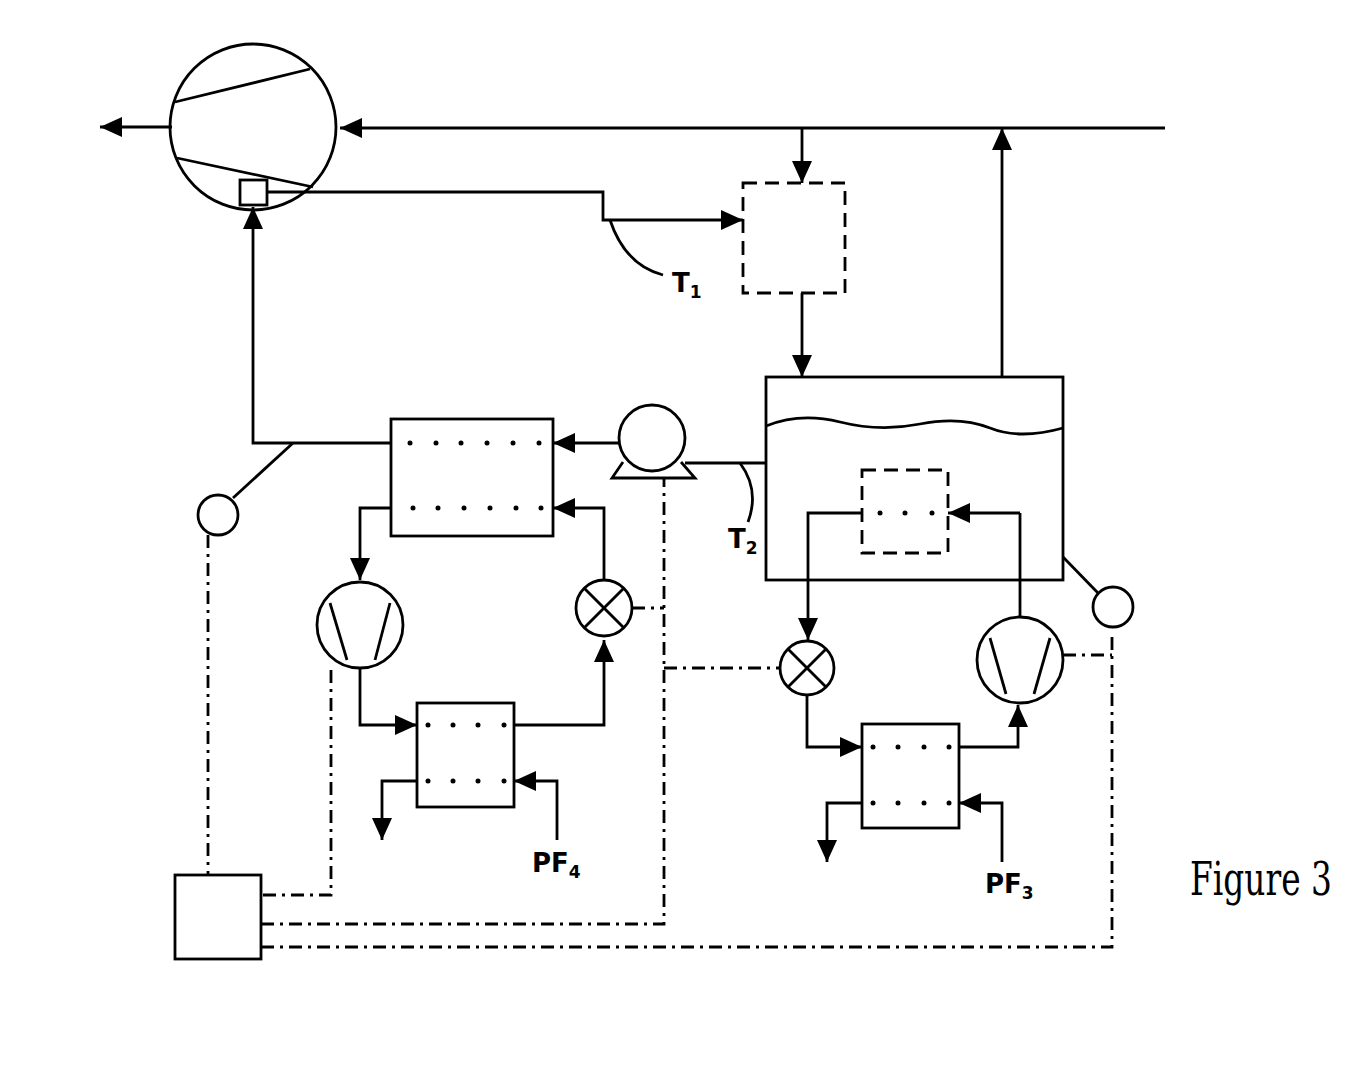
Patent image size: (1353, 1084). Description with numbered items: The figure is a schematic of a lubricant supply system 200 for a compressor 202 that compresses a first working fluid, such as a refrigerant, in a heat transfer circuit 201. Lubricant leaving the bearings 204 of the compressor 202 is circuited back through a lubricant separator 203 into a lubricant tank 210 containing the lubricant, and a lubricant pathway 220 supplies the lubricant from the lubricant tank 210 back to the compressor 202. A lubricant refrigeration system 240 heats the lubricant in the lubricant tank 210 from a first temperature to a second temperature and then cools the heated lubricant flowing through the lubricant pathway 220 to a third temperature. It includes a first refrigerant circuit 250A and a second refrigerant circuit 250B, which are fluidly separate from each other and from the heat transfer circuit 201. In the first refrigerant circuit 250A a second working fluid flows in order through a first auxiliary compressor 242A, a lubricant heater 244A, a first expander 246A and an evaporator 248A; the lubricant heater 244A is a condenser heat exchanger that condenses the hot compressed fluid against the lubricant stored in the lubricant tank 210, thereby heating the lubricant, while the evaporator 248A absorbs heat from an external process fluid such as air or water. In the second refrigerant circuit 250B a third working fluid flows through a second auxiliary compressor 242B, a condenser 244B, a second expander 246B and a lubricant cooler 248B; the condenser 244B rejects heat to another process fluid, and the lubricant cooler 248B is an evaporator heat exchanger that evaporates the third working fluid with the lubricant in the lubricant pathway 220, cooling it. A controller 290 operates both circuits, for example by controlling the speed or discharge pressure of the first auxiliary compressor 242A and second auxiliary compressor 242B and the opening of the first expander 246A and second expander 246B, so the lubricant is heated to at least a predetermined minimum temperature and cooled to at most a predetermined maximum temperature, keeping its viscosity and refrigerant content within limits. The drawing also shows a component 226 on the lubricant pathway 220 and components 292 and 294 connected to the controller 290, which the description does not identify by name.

The lubricant supply system 200 is at (232, 400).
The heat transfer circuit 201 is at (400, 128).
The compressor 202 is at (183, 178).
The lubricant separator 203 is at (845, 260).
The bearings 204 is at (237, 193).
The lubricant tank 210 is at (1063, 380).
The lubricant pathway 220 is at (252, 398).
The pump 226 is at (652, 405).
The lubricant refrigeration system 240 is at (293, 653).
The first auxiliary compressor 242A is at (1058, 685).
The second auxiliary compressor 242B is at (345, 587).
The lubricant heater 244A is at (948, 478).
The condenser 244B is at (497, 807).
The first expander 246A is at (797, 695).
The second expander 246B is at (615, 637).
The evaporator 248A is at (932, 828).
The lubricant cooler 248B is at (478, 418).
The first refrigerant circuit 250A is at (1020, 750).
The second refrigerant circuit 250B is at (357, 720).
The controller 290 is at (173, 897).
The first temperature sensor 292 is at (1135, 600).
The third temperature sensor 294 is at (205, 528).